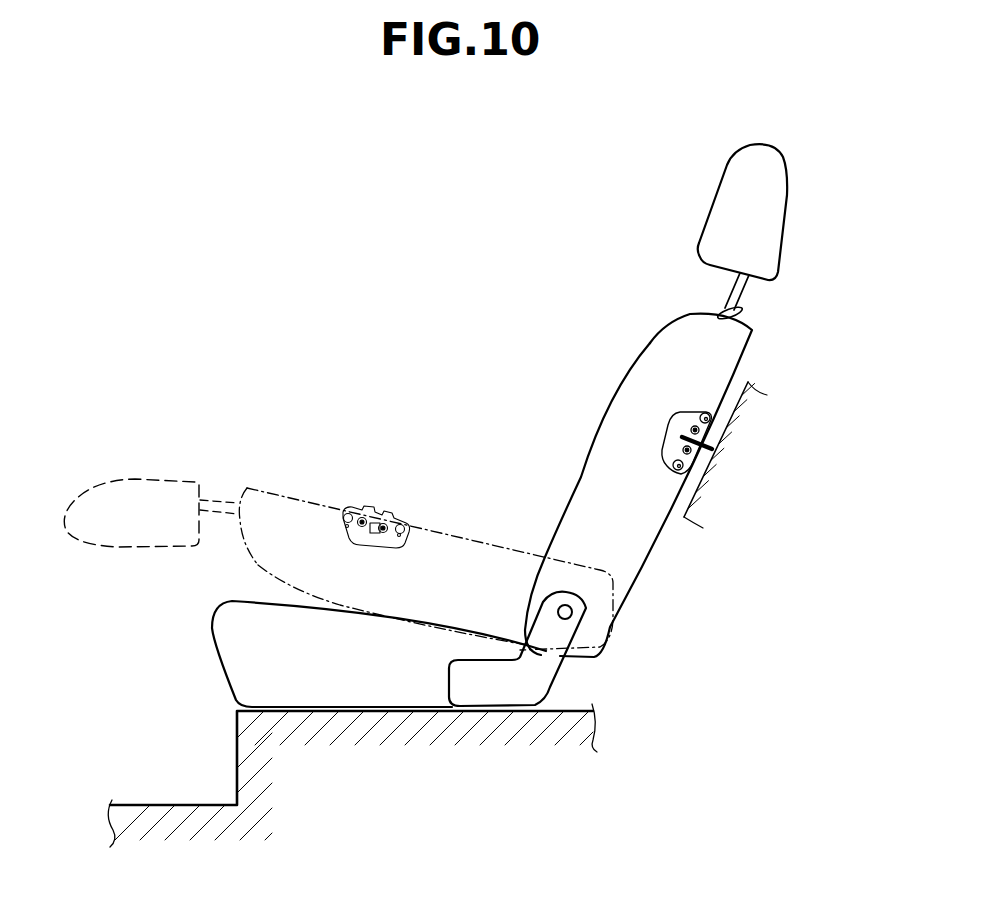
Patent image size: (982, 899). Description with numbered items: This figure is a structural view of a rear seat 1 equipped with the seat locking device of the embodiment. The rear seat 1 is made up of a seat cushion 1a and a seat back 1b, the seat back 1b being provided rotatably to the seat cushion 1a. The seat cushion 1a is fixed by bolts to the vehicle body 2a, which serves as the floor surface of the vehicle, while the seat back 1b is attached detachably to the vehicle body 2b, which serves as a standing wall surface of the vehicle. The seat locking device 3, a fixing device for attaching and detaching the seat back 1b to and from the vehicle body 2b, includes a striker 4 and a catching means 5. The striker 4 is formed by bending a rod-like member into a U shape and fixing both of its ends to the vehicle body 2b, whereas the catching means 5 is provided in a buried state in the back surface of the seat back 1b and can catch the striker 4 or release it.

The rear seat 1 is at (425, 425).
The seat cushion 1a is at (413, 640).
The seat back 1b is at (586, 480).
The vehicle body 2a is at (578, 712).
The vehicle body 2b is at (742, 422).
The seat locking device 3 is at (756, 501).
The striker 4 is at (717, 438).
The catching means 5 is at (690, 456).